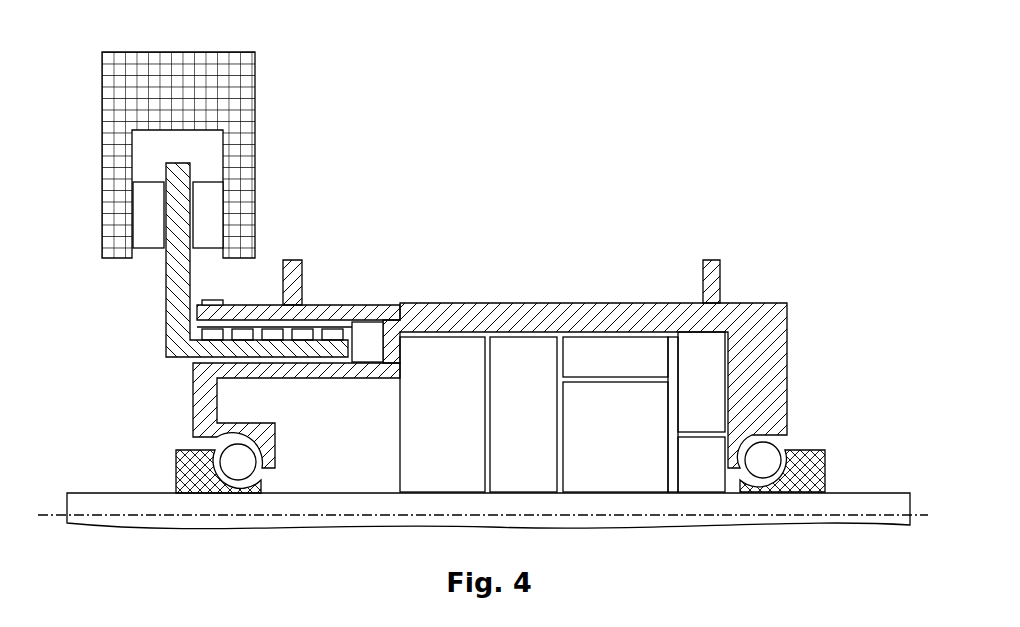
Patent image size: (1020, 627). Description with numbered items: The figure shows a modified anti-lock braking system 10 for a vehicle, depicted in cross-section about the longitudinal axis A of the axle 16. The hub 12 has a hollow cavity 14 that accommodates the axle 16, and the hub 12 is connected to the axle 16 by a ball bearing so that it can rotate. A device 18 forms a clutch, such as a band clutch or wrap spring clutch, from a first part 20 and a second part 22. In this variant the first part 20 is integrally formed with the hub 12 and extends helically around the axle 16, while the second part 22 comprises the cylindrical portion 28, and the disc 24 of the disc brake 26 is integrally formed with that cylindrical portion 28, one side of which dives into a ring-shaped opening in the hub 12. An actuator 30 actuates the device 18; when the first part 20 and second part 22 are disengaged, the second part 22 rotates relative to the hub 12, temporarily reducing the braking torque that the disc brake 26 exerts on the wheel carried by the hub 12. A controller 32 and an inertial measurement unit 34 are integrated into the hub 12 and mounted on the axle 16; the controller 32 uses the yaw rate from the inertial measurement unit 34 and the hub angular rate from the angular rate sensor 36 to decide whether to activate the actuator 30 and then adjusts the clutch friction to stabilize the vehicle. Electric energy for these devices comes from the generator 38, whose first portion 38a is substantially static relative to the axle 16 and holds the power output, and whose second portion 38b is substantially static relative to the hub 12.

The anti-lock braking system 10 is at (582, 60).
The hub 12 is at (570, 303).
The hollow cavity 14 is at (333, 472).
The axle 16 is at (147, 494).
The device 18 is at (148, 403).
The first part 20 is at (282, 380).
The second part 22 is at (303, 330).
The disc 24 is at (165, 293).
The disc brake 26 is at (305, 112).
The cylindrical portion 28 is at (258, 330).
The actuator 30 is at (366, 335).
The controller 32 is at (431, 428).
The inertial measurement unit 34 is at (511, 428).
The angular rate sensor 36 is at (701, 464).
The generator 38 is at (655, 235).
The first portion 38a is at (600, 450).
The second portion 38b is at (600, 367).